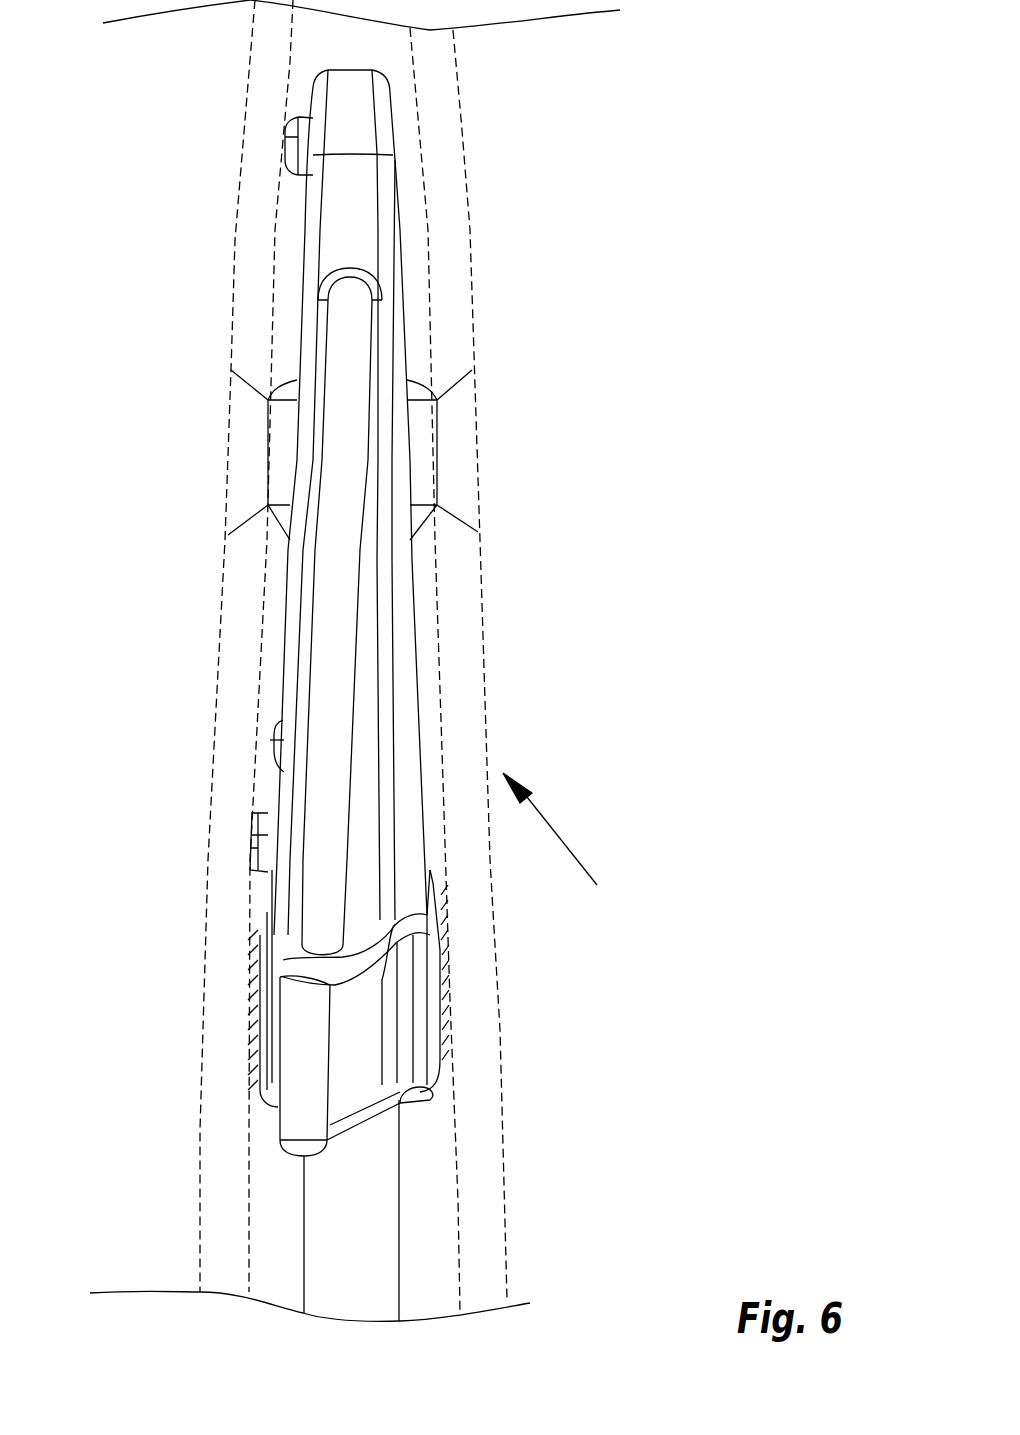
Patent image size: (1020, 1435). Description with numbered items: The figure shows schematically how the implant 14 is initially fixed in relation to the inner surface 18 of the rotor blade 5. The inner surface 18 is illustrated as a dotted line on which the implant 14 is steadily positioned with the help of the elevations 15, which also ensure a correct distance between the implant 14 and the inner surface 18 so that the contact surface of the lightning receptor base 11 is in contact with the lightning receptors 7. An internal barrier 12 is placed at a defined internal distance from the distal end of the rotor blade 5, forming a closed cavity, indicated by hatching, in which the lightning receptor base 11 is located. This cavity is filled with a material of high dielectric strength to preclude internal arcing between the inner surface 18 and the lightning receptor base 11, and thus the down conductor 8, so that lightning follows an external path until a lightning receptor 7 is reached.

The rotor blade 5 is at (263, 22).
The lightning receptor 7 is at (230, 390).
The down conductor 8 is at (373, 1232).
The lightning receptor base 11 is at (278, 460).
The internal barrier 12 is at (435, 1007).
The implant 14 is at (565, 844).
The elevations 15 is at (283, 150).
The inner surface 18 is at (290, 62).